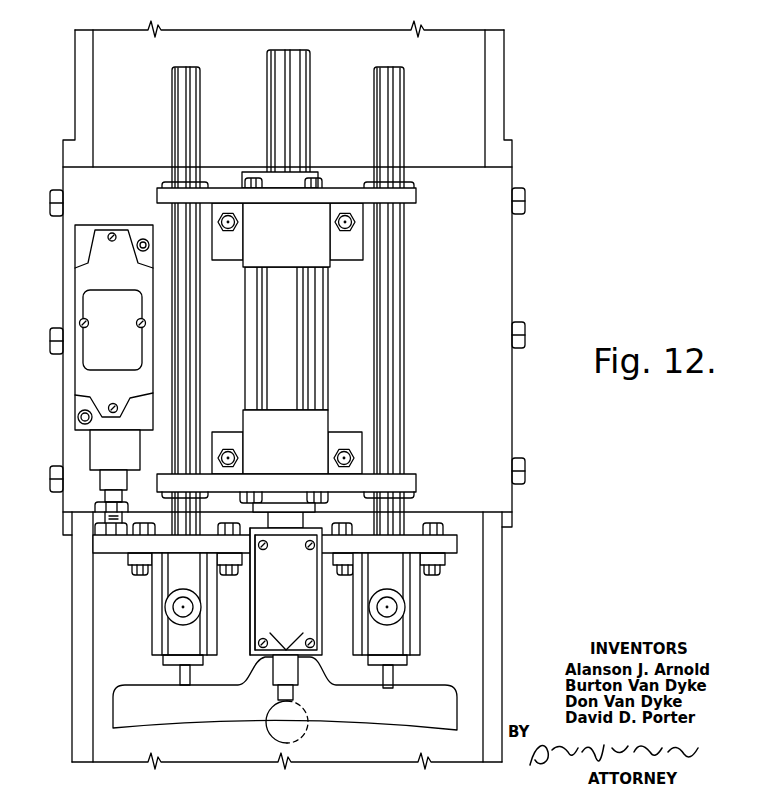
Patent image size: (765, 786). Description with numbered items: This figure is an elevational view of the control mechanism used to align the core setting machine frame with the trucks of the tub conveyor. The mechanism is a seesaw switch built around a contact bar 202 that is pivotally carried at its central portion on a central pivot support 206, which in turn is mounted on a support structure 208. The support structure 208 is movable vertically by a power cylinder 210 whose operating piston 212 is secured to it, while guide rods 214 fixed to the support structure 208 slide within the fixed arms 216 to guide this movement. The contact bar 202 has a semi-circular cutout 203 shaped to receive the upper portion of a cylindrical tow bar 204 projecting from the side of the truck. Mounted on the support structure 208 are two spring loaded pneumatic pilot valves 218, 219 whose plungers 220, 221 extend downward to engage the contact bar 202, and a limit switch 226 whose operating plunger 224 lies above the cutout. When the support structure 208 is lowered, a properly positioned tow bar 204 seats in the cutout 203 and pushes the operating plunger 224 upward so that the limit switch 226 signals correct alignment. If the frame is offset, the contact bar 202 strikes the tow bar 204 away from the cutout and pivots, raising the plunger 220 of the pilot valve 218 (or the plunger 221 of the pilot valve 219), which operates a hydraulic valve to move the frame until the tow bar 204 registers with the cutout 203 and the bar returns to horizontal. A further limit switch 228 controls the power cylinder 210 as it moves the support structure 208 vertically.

The contact bar 202 is at (413, 727).
The semi-circular cutout 203 is at (268, 733).
The tow bar 204 is at (298, 740).
The central pivot support 206 is at (322, 627).
The support structure 208 is at (412, 534).
The power cylinder 210 is at (326, 348).
The operating piston 212 is at (304, 520).
The guide rods 214 is at (200, 346).
The fixed arms 216 is at (347, 187).
The pneumatic pilot valve 218 is at (153, 619).
The pneumatic pilot valve 219 is at (420, 621).
The plunger 220 is at (179, 677).
The plunger 221 is at (394, 678).
The operating plunger 224 is at (273, 690).
The limit switch 226 is at (253, 622).
The limit switch 228 is at (85, 372).